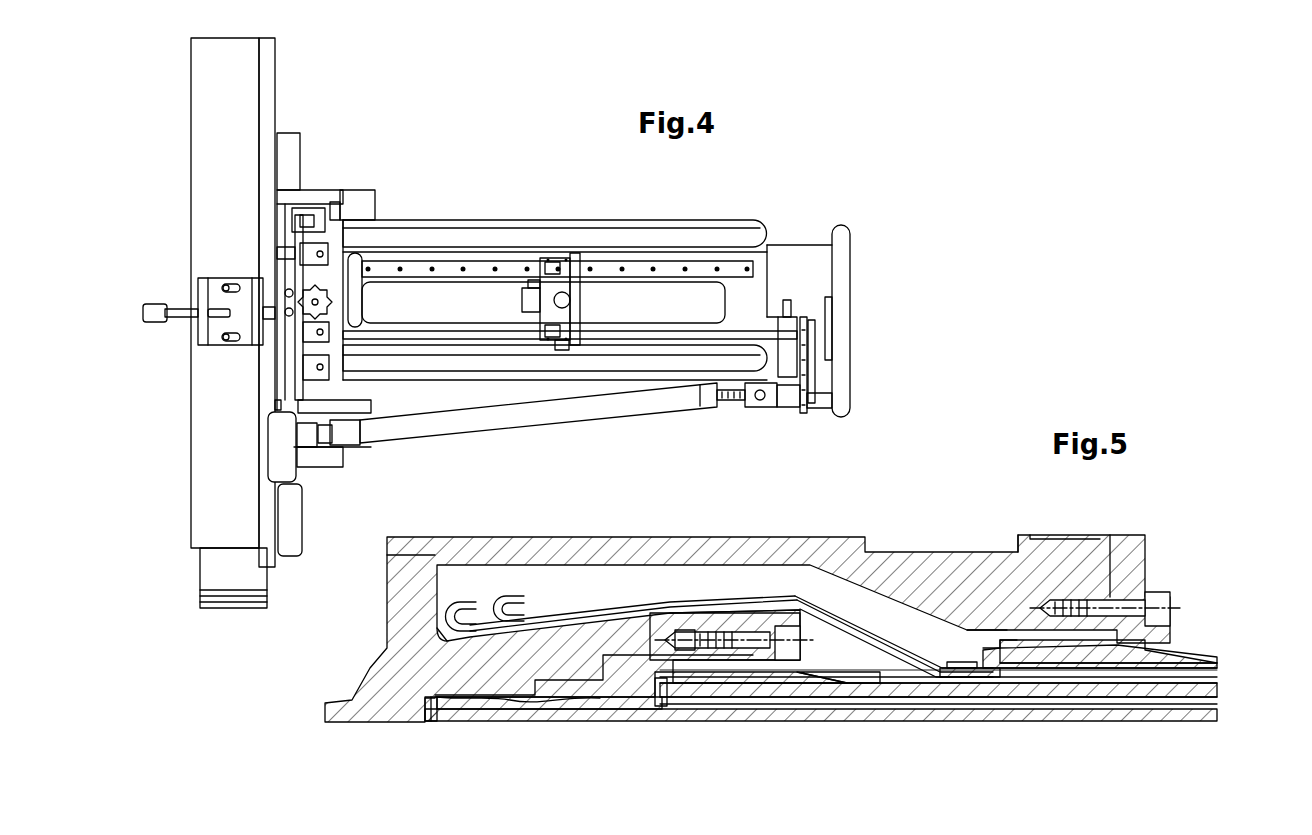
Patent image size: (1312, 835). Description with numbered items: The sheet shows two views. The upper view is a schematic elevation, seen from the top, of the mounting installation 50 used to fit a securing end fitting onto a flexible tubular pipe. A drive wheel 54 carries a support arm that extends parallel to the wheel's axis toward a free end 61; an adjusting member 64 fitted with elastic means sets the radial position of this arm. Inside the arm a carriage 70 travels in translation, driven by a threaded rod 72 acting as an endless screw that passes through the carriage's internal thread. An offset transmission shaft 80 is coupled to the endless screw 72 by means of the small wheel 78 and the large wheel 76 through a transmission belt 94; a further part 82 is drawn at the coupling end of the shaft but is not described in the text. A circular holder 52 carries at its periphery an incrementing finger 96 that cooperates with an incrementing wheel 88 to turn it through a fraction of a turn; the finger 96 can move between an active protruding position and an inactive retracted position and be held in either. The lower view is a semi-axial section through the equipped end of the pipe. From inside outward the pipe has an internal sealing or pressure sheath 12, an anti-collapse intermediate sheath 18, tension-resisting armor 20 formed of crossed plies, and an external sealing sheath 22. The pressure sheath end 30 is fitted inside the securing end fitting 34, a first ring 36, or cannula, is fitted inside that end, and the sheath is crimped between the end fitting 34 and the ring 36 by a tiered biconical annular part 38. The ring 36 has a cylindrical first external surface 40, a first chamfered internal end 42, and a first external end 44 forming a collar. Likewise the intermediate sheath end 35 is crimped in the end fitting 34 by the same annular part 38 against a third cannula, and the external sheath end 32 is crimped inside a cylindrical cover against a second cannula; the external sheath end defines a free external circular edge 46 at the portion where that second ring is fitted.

In FIG. 5, the internal sealing sheath 12 is at (1153, 711).
In FIG. 5, the intermediate sheath 18 is at (913, 688).
In FIG. 5, the armor 20 is at (1217, 678).
In FIG. 5, the external sealing sheath 22 is at (1197, 668).
In FIG. 5, the pressure sheath end 30 is at (487, 707).
In FIG. 5, the external sealing sheath end 32 is at (1000, 682).
In FIG. 5, the securing end fitting 34 is at (398, 636).
In FIG. 5, the intermediate sheath end 35 is at (668, 690).
In FIG. 5, the first ring 36 is at (451, 722).
In FIG. 5, the tiered biconical annular part 38 is at (650, 650).
In FIG. 5, the first external surface 40 is at (456, 702).
In FIG. 5, the first chamfered internal end 42 is at (560, 718).
In FIG. 5, the first external end 44 is at (430, 722).
In FIG. 5, the free external circular edge 46 is at (457, 636).
In FIG. 4, the mounting installation 50 is at (448, 126).
In FIG. 4, the circular holder 52 is at (200, 108).
In FIG. 4, the drive wheel 54 is at (268, 495).
In FIG. 4, the free end 61 is at (890, 233).
In FIG. 4, the adjusting member 64 is at (318, 302).
In FIG. 4, the carriage 70 is at (576, 250).
In FIG. 4, the threaded rod 72 is at (612, 326).
In FIG. 4, the large wheel 76 is at (790, 322).
In FIG. 4, the small wheel 78 is at (805, 306).
In FIG. 4, the offset transmission shaft 80 is at (614, 412).
In FIG. 4, the coupling plate 82 is at (804, 422).
In FIG. 4, the incrementing wheel 88 is at (277, 406).
In FIG. 4, the transmission belt 94 is at (805, 347).
In FIG. 4, the incrementing finger 96 is at (272, 298).